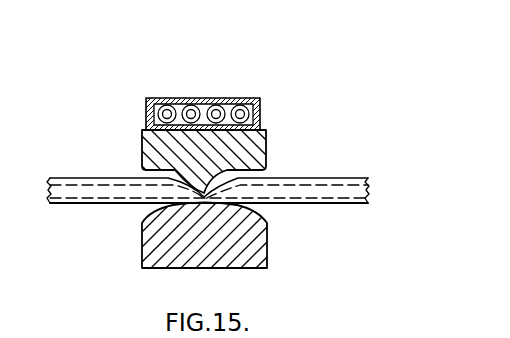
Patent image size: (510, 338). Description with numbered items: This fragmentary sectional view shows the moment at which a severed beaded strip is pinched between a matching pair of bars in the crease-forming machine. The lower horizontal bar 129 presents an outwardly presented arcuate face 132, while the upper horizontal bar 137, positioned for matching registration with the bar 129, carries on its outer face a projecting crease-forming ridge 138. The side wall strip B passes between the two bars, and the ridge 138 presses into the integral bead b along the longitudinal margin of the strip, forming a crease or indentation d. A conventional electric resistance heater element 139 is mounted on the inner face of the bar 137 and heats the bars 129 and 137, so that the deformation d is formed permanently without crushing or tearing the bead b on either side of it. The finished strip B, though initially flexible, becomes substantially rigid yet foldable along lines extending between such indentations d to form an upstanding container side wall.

The electric resistance heater element 139 is at (245, 97).
The horizontal bar 137 is at (256, 146).
The horizontal bar 129 is at (225, 262).
The arcuate face 132 is at (261, 213).
The crease-forming ridge 138 is at (193, 186).
The side wall strip B is at (72, 182).
The bead b is at (331, 188).
The crease or indentation d is at (232, 186).